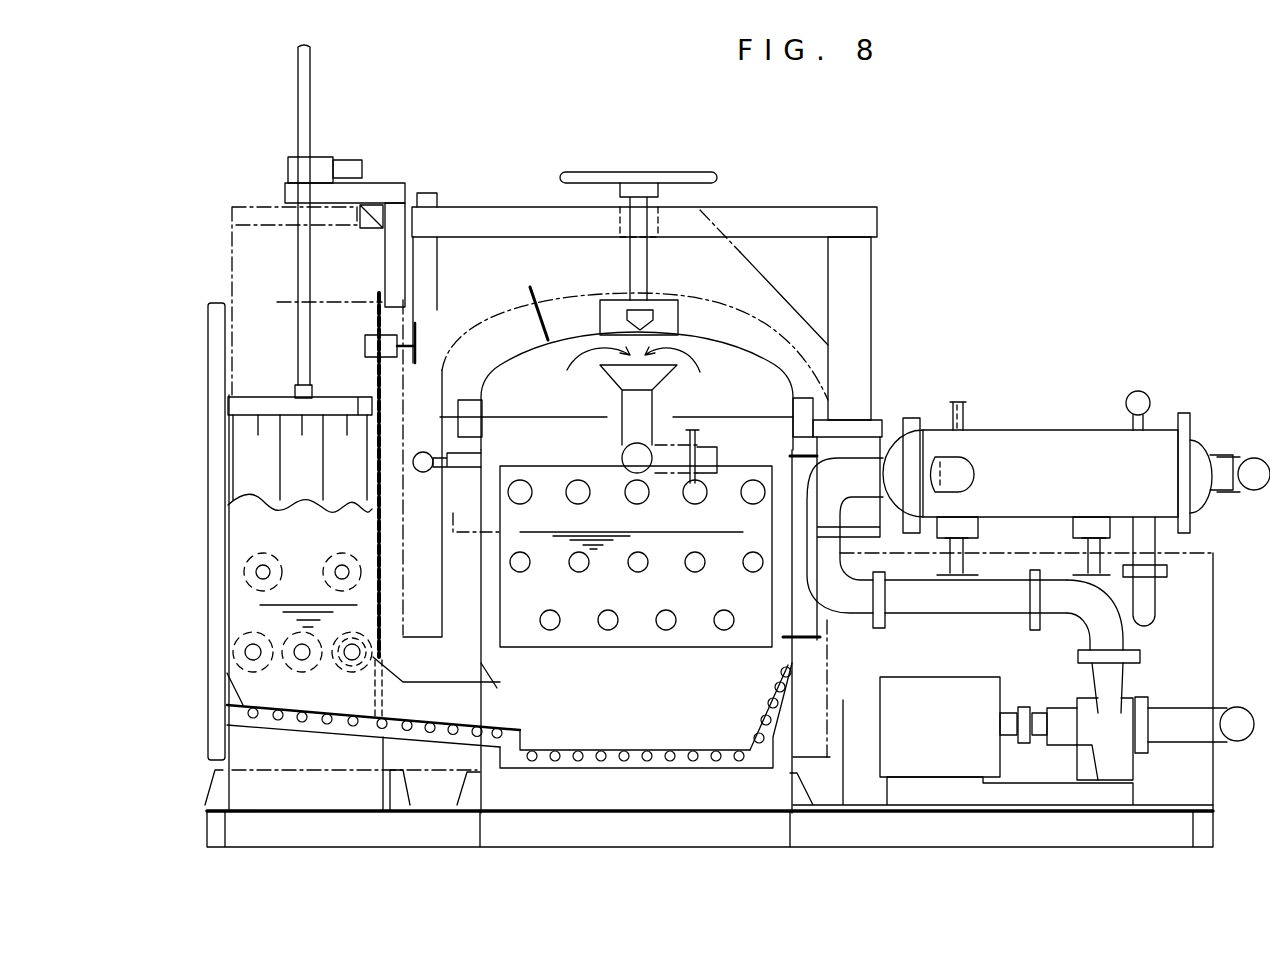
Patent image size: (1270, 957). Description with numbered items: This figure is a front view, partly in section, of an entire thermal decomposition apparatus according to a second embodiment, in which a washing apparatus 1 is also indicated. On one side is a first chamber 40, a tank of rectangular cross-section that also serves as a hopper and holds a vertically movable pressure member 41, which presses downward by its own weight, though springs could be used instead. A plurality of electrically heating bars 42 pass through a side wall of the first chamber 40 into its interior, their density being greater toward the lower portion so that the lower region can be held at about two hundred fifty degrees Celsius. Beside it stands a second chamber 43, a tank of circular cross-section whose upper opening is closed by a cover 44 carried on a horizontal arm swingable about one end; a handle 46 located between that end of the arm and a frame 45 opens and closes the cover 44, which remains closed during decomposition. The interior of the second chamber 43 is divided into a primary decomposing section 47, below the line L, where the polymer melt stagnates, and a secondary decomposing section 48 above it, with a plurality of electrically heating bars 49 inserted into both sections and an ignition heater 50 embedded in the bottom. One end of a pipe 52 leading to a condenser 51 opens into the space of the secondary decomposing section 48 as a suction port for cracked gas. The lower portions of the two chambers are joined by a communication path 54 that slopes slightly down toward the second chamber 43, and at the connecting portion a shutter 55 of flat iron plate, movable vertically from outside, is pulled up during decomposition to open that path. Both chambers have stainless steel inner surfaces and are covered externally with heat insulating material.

The washing apparatus 1 is at (1073, 117).
The first chamber 40 is at (249, 533).
The pressure member 41 is at (257, 393).
The electrically heating bars 42 is at (243, 593).
The second chamber 43 is at (572, 732).
The cover 44 is at (485, 330).
The frame 45 is at (863, 268).
The handle 46 is at (703, 172).
The primary decomposing section 47 is at (643, 730).
The secondary decomposing section 48 is at (740, 443).
The electrically heating bars 49 is at (519, 485).
The ignition heater 50 is at (733, 762).
The condenser 51 is at (1045, 430).
The pipe 52 is at (627, 407).
The communication path 54 is at (447, 708).
The shutter 55 is at (382, 323).